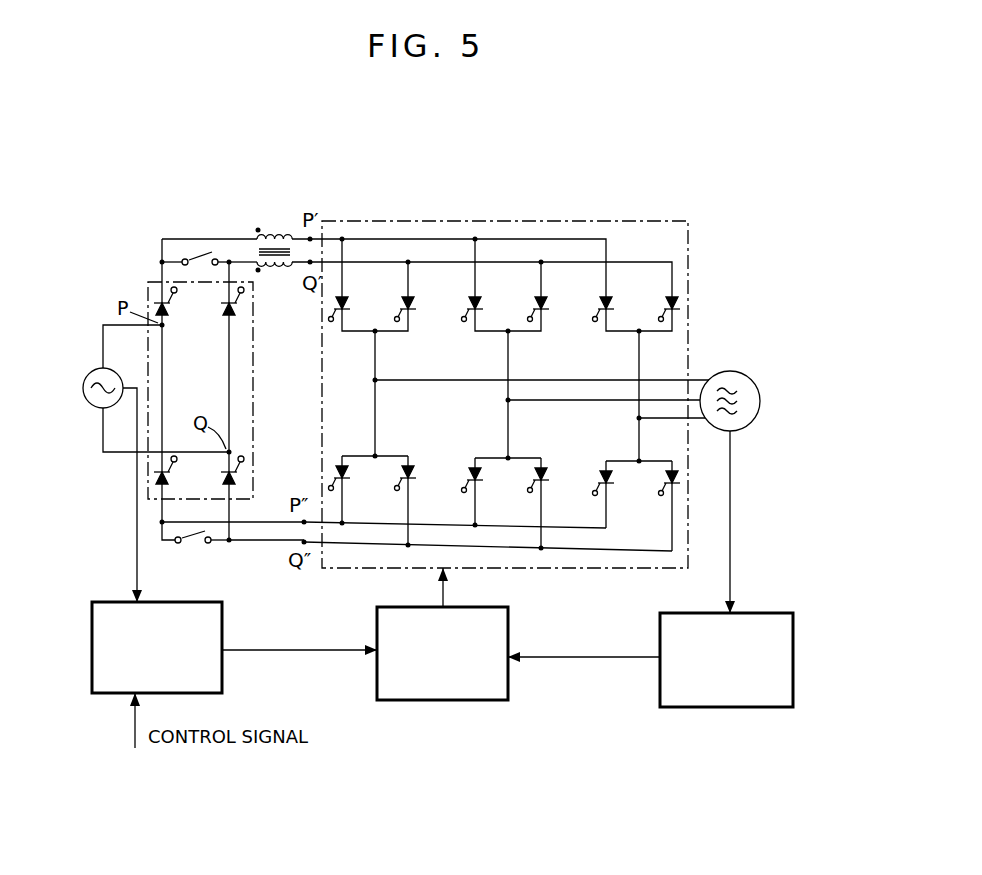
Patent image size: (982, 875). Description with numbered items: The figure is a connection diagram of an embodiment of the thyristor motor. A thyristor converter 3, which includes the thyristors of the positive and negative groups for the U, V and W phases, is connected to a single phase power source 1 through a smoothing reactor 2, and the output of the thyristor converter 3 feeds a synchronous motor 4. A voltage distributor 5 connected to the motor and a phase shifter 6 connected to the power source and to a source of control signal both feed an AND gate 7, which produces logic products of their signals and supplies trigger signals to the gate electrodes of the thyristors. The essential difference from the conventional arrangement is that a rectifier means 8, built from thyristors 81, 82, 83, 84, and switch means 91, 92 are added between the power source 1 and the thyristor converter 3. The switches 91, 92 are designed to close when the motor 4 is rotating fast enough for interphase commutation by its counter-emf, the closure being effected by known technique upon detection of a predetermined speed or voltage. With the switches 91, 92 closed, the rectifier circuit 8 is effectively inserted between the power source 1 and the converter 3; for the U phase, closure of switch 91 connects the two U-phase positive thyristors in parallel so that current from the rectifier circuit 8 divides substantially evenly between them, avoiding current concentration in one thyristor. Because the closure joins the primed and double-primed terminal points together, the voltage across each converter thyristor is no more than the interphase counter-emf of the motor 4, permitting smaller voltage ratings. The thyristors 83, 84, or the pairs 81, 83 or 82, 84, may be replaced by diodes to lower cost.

The single phase power source 1 is at (94, 371).
The smoothing reactor 2 is at (266, 204).
The thyristor converter 3 is at (480, 219).
The synchronous motor 4 is at (728, 371).
The voltage distributor 5 is at (760, 596).
The phase shifter 6 is at (178, 586).
The AND gate 7 is at (468, 590).
The rectifier means 8 is at (259, 370).
The thyristor 81 is at (173, 302).
The thyristor 82 is at (154, 472).
The thyristor 83 is at (239, 304).
The thyristor 84 is at (238, 476).
The switch 91 is at (194, 252).
The switch 92 is at (184, 548).